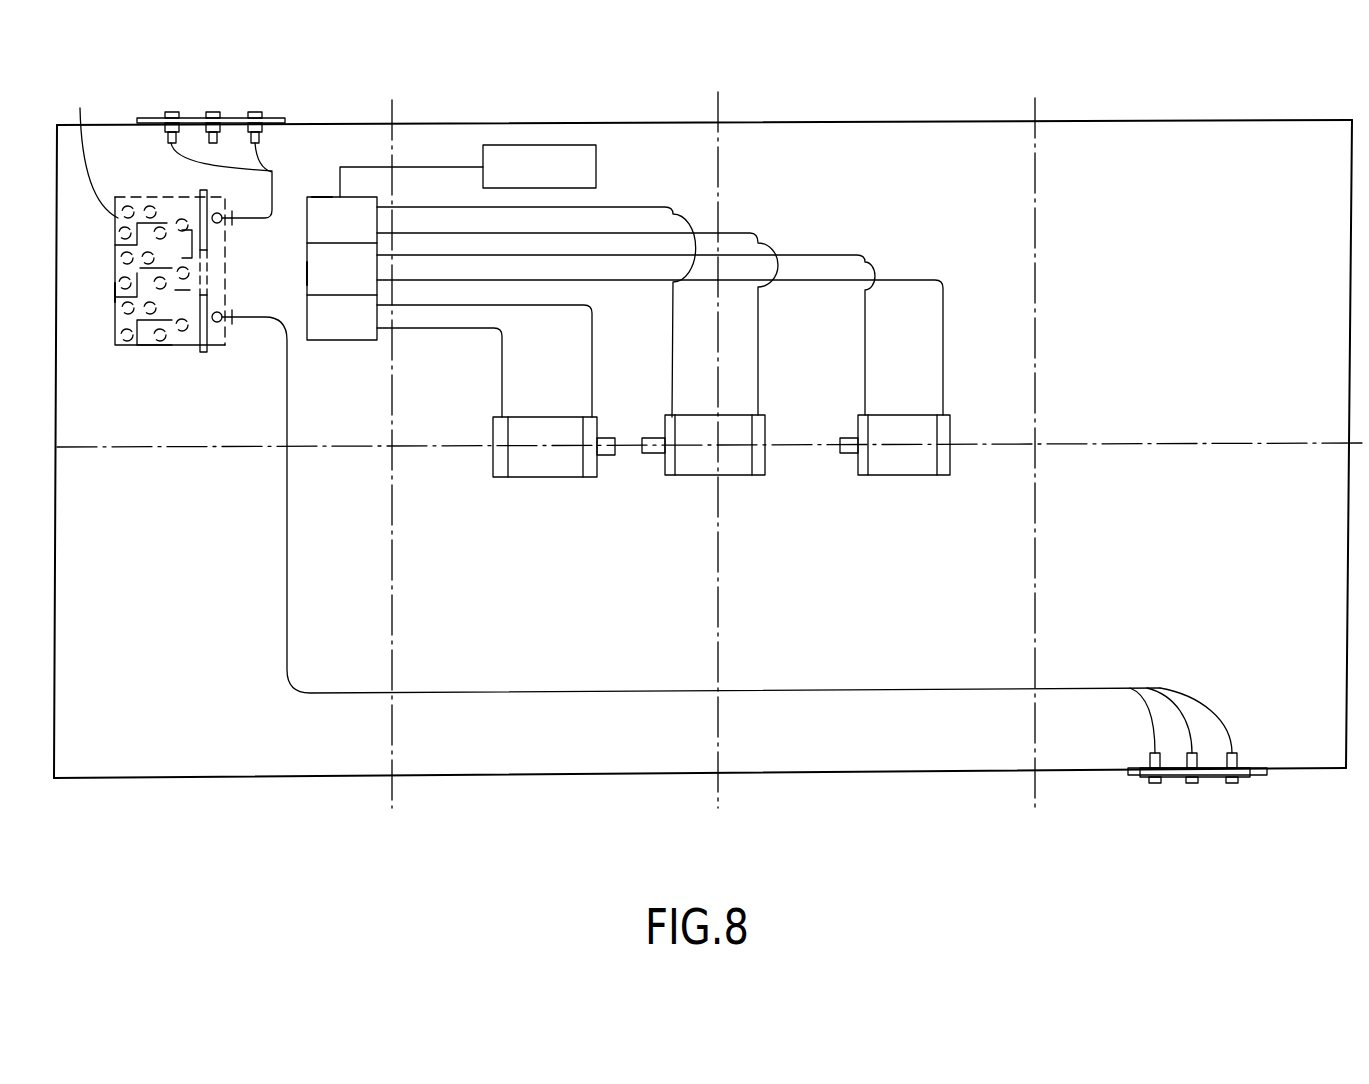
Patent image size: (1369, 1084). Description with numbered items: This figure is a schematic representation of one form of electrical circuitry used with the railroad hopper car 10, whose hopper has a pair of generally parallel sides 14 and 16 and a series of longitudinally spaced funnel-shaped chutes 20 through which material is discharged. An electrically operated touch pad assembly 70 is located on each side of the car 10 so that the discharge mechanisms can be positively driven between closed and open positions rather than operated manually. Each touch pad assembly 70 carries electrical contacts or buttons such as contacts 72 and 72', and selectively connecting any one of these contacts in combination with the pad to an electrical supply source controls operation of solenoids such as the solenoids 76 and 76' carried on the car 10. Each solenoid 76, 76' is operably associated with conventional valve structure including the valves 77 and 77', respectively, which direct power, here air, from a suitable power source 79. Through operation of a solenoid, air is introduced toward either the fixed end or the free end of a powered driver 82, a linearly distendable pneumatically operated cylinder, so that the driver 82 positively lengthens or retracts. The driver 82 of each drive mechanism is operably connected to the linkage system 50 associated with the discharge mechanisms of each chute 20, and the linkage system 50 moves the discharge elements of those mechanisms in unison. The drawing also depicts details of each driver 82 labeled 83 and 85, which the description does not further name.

The railroad hopper car 10 is at (1218, 113).
The side 14 is at (845, 773).
The side 16 is at (930, 118).
The funnel-shaped chute 20 is at (1080, 444).
The linkage system 50 is at (529, 495).
The touch pad assembly 70 is at (305, 116).
The electrical contact 72 is at (704, 450).
The electrical contact 72' is at (724, 443).
The solenoid 76 is at (173, 285).
The solenoid 76' is at (94, 296).
The valve 77 is at (395, 274).
The valve 77' is at (288, 275).
The power source 79 is at (590, 165).
The powered driver 82 is at (527, 425).
The motor end cap 83 is at (500, 480).
The motor shaft 85 is at (607, 457).